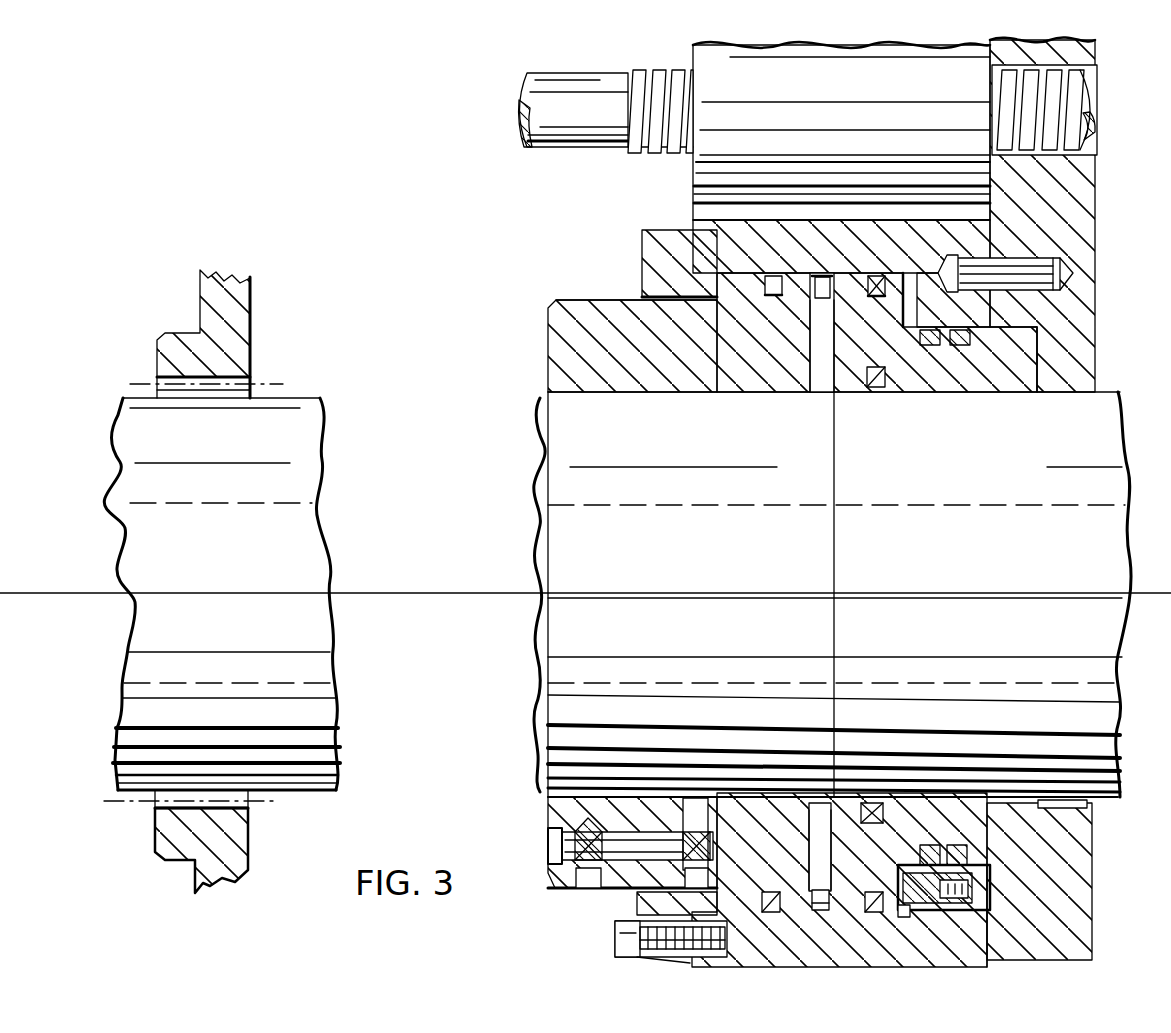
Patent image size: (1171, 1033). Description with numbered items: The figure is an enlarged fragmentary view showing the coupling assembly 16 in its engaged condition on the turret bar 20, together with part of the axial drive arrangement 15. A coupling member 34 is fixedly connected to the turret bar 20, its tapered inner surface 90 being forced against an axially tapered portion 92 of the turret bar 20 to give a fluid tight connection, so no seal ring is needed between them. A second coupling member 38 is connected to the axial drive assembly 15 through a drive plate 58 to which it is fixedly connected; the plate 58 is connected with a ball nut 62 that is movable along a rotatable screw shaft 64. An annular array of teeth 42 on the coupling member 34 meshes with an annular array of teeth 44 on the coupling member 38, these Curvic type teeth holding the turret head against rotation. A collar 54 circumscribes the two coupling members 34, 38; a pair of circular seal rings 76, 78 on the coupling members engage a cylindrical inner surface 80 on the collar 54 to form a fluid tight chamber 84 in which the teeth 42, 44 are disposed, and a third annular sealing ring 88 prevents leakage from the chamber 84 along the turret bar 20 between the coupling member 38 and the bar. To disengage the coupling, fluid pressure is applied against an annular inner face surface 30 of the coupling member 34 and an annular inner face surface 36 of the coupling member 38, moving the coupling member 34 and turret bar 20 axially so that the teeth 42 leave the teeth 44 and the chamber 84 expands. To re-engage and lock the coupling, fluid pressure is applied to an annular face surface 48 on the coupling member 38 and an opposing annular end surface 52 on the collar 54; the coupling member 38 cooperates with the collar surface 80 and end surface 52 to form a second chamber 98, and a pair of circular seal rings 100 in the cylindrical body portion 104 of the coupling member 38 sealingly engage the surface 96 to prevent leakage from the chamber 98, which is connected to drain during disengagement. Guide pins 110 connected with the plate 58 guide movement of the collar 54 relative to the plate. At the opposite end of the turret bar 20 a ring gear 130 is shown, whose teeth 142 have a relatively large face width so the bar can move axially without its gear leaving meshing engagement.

The axial drive arrangement 15 is at (465, 75).
The coupling assembly 16 is at (537, 297).
The turret bar 20 is at (137, 712).
The annular inner face surface 30 is at (812, 340).
The coupling member 34 is at (545, 362).
The annular inner face surface 36 is at (836, 386).
The second coupling member 38 is at (1008, 397).
The annular array of teeth 42 is at (810, 300).
The annular array of teeth 44 is at (835, 290).
The annular face surface 48 is at (905, 320).
The annular face surface 52 is at (912, 276).
The collar 54 is at (645, 228).
The drive plate 58 is at (1085, 216).
The ball nut 62 is at (715, 158).
The screw shaft 64 is at (520, 98).
The seal ring 76 is at (778, 250).
The seal ring 78 is at (877, 276).
The cylindrical inner surface 80 is at (822, 273).
The fluid tight chamber 84 is at (818, 390).
The third annular sealing ring 88 is at (886, 377).
The tapered inner surface 90 is at (599, 394).
The axially tapered portion 92 is at (786, 540).
The surface 96 is at (942, 393).
The second chamber 98 is at (907, 306).
The seal rings 100 is at (940, 350).
The cylindrical body portion 104 is at (995, 318).
The guide pins 110 is at (1012, 276).
The ring gear 130 is at (238, 320).
The teeth 142 is at (256, 378).